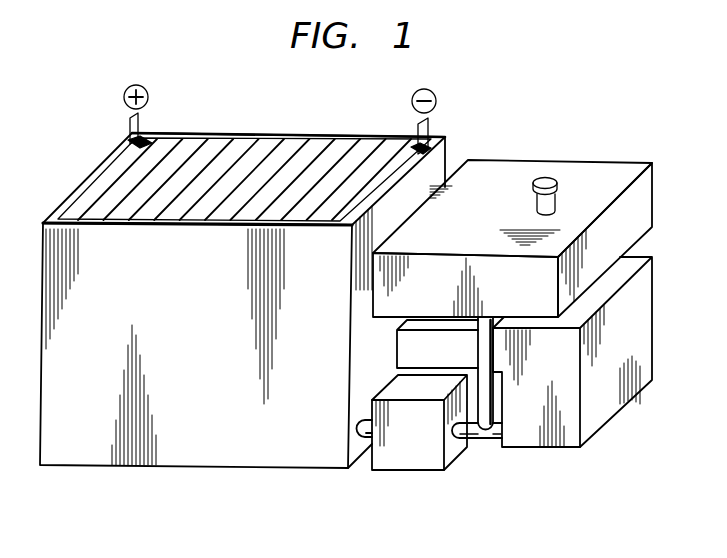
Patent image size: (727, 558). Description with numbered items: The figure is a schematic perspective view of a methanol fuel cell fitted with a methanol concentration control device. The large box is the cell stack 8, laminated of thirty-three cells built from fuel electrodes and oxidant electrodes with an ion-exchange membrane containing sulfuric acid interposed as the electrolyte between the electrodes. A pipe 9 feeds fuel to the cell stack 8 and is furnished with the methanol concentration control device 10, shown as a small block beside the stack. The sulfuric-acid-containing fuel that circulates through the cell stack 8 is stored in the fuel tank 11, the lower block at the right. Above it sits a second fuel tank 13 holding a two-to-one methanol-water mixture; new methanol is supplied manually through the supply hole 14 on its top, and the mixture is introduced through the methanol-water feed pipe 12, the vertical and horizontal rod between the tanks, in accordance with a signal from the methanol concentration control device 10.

The cell stack 8 is at (358, 146).
The pipe 9 is at (369, 441).
The methanol concentration control device 10 is at (408, 462).
The fuel tank 11 is at (526, 446).
The methanol-water feed pipe 12 is at (479, 350).
The fuel tank 13 is at (601, 171).
The supply hole 14 is at (546, 172).